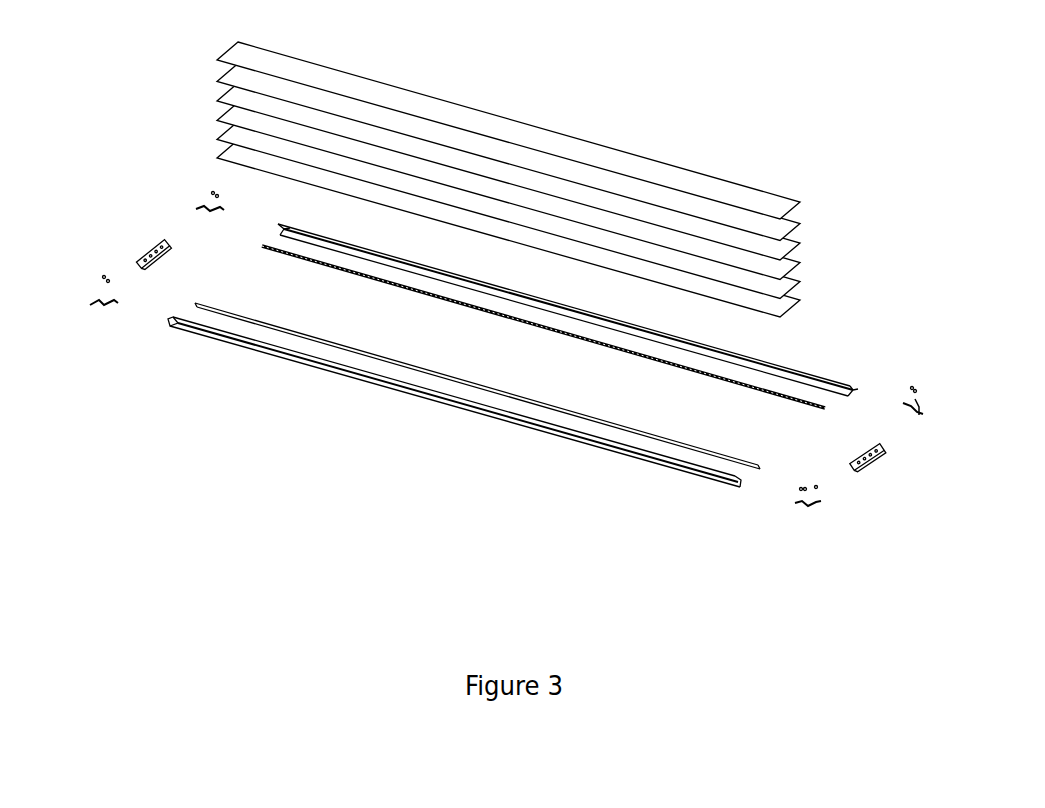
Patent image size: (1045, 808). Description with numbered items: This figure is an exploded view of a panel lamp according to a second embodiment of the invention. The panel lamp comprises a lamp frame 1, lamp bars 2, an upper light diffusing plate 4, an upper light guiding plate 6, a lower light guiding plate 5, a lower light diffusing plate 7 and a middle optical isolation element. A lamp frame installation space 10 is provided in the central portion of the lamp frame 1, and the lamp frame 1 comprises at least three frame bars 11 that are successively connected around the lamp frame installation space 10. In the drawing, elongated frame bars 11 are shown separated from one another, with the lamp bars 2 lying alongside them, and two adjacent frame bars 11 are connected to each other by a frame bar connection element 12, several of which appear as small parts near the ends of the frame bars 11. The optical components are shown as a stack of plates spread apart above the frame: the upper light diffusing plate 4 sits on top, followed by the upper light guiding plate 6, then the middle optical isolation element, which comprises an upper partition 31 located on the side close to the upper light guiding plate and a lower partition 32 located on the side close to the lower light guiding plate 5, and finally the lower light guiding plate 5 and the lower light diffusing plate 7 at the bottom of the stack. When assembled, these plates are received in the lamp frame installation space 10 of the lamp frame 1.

The lamp frame 1 is at (283, 383).
The lamp bars 2 is at (257, 321).
The upper light diffusing plate 4 is at (801, 223).
The lower light guiding plate 5 is at (801, 285).
The upper light guiding plate 6 is at (583, 179).
The lower light diffusing plate 7 is at (801, 303).
The lamp frame installation space 10 is at (498, 358).
The frame bars 11 is at (148, 250).
The frame bar connection element 12 is at (204, 205).
The upper partition 31 is at (801, 246).
The lower partition 32 is at (801, 267).